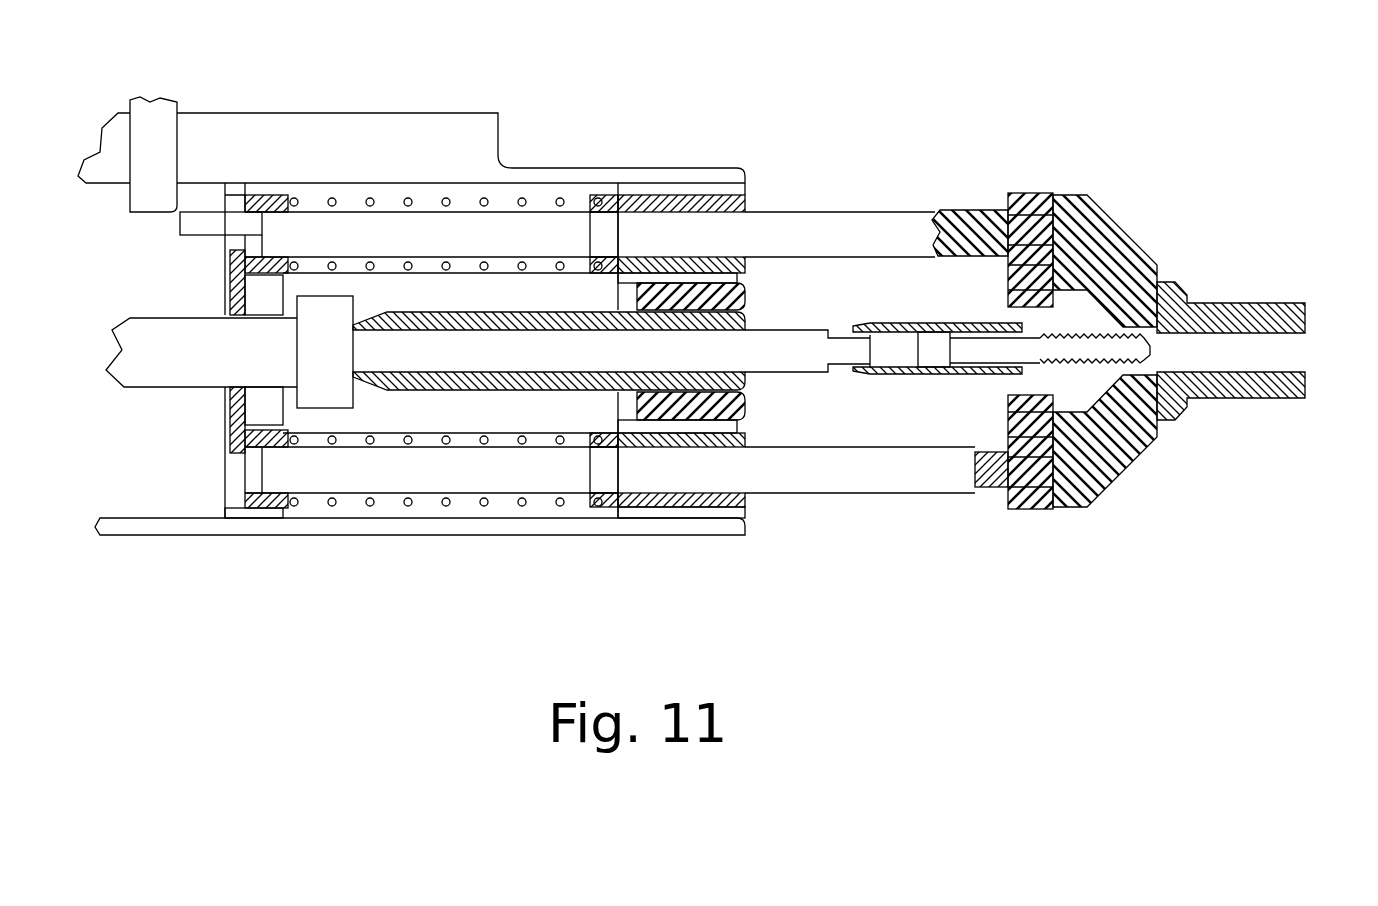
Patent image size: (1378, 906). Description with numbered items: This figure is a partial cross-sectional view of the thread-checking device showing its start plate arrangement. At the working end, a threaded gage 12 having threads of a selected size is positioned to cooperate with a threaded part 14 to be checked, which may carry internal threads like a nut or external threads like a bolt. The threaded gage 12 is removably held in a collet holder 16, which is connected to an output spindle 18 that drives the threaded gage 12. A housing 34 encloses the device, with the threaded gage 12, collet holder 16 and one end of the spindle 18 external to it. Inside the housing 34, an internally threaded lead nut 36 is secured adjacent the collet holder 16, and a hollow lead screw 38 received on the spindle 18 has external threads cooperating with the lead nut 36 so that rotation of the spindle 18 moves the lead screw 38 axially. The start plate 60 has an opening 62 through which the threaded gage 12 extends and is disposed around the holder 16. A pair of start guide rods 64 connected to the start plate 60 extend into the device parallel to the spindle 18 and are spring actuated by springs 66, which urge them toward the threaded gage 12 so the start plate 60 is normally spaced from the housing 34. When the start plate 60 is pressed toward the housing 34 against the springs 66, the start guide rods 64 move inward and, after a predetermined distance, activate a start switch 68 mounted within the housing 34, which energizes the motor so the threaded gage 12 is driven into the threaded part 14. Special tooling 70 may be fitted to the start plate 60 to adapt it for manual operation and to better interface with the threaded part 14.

The threaded gage 12 is at (1142, 349).
The threaded part 14 is at (1268, 303).
The collet holder 16 is at (917, 374).
The output spindle 18 is at (567, 345).
The housing 34 is at (718, 536).
The lead nut 36 is at (747, 302).
The lead screw 38 is at (530, 310).
The start plate 60 is at (1020, 193).
The opening 62 is at (1008, 392).
The start guide rods 64 is at (815, 210).
The springs 66 is at (446, 198).
The start switch 68 is at (150, 212).
The special tooling 70 is at (1110, 195).